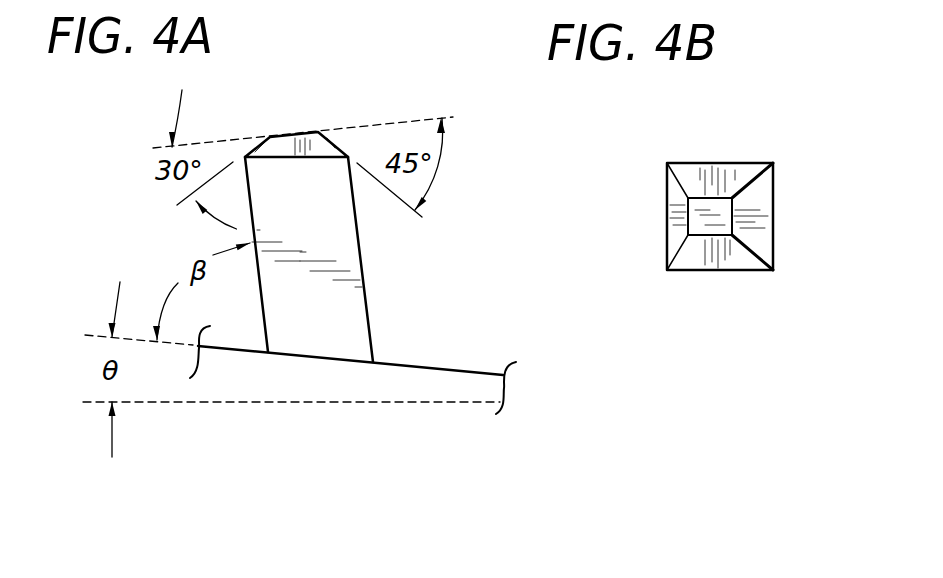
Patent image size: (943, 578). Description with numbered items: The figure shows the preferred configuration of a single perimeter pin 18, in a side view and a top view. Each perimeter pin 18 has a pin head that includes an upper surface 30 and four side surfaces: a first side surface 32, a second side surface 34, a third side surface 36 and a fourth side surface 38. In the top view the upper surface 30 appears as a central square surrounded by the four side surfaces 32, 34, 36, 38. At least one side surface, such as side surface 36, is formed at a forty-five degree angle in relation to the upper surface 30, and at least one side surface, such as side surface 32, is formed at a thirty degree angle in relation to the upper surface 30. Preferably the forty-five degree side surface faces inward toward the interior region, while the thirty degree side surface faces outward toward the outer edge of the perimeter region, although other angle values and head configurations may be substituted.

In FIG. 4A, the perimeter pin 18 is at (158, 445).
In FIG. 4B, the perimeter pin 18 is at (765, 122).
In FIG. 4A, the upper surface 30 is at (290, 135).
In FIG. 4B, the first side surface 32 is at (680, 220).
In FIG. 4B, the second side surface 34 is at (722, 175).
In FIG. 4B, the third side surface 36 is at (762, 208).
In FIG. 4B, the fourth side surface 38 is at (718, 267).